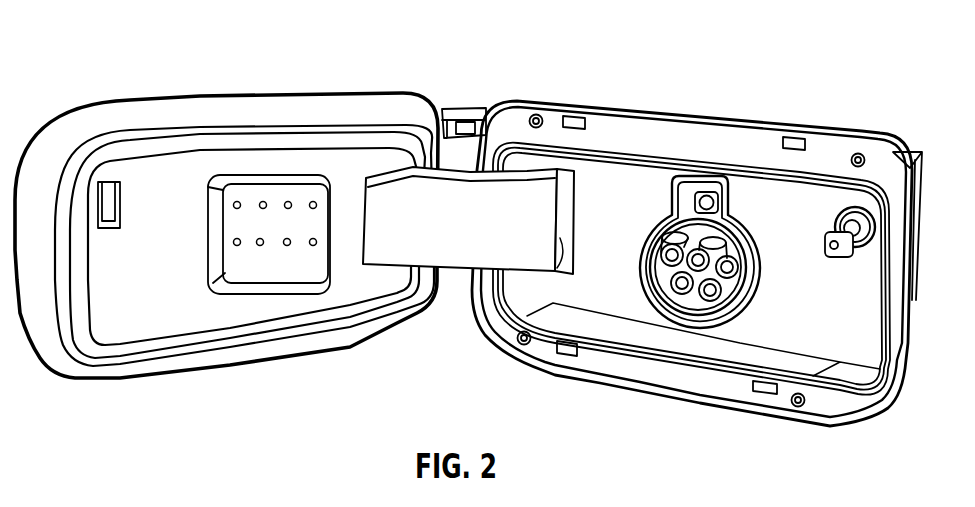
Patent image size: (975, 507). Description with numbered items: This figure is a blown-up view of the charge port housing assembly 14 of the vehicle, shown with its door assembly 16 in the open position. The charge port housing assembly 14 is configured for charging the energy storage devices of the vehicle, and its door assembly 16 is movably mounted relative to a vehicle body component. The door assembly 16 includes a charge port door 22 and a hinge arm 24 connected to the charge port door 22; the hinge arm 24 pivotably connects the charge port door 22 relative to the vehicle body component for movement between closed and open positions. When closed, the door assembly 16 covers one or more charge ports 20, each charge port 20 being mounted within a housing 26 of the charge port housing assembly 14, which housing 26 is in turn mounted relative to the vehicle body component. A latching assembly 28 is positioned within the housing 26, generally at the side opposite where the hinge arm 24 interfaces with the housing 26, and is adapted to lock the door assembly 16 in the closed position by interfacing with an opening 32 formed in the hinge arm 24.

The charge port housing assembly 14 is at (734, 100).
The door assembly 16 is at (344, 82).
The charge port 20 is at (652, 281).
The charge port door 22 is at (221, 93).
The hinge arm 24 is at (157, 300).
The housing 26 is at (603, 182).
The latching assembly 28 is at (838, 214).
The opening 32 is at (108, 188).